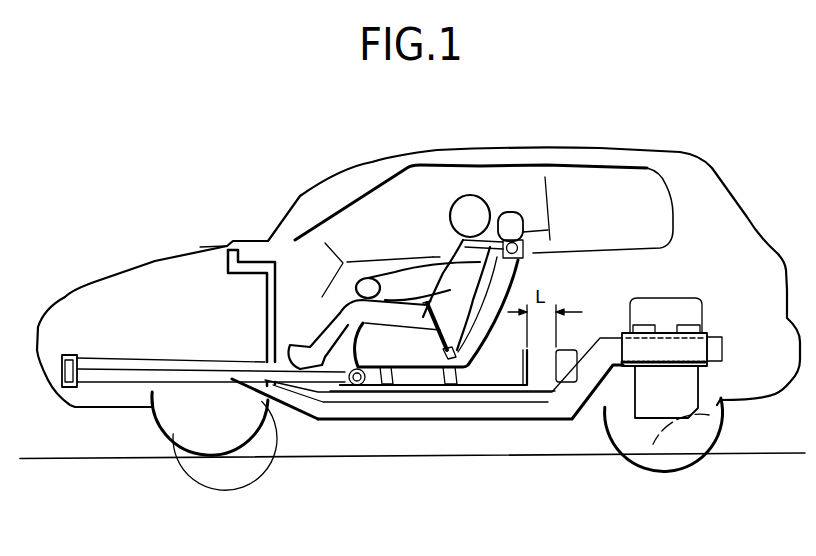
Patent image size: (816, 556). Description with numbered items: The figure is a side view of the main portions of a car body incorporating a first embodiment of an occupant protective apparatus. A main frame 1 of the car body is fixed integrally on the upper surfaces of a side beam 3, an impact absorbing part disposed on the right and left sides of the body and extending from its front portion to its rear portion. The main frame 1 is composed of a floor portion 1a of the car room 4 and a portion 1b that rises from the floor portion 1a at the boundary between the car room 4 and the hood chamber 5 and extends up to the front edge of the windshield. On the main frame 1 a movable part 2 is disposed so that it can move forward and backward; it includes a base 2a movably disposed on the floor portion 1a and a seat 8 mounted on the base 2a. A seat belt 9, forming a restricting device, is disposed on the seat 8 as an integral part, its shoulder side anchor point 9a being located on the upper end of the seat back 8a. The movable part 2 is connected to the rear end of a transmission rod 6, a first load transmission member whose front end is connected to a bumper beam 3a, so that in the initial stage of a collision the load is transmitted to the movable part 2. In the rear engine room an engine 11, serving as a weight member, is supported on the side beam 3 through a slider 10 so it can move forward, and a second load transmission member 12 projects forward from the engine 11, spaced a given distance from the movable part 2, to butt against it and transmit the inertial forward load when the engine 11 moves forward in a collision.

The main frame 1 is at (418, 494).
The floor portion 1a is at (387, 403).
The rising portion 1b is at (280, 333).
The movable part 2 is at (530, 494).
The base 2a is at (503, 378).
The side beam 3 is at (200, 360).
The bumper beam 3a is at (70, 389).
The car room 4 is at (403, 236).
The hood chamber 5 is at (145, 329).
The transmission rod 6 is at (276, 388).
The seat 8 is at (437, 368).
The seat back 8a is at (500, 283).
The seat belt 9 is at (492, 242).
The shoulder side anchor point 9a is at (548, 230).
The slider 10 is at (684, 338).
The engine 11 is at (668, 407).
The second load transmission member 12 is at (577, 354).